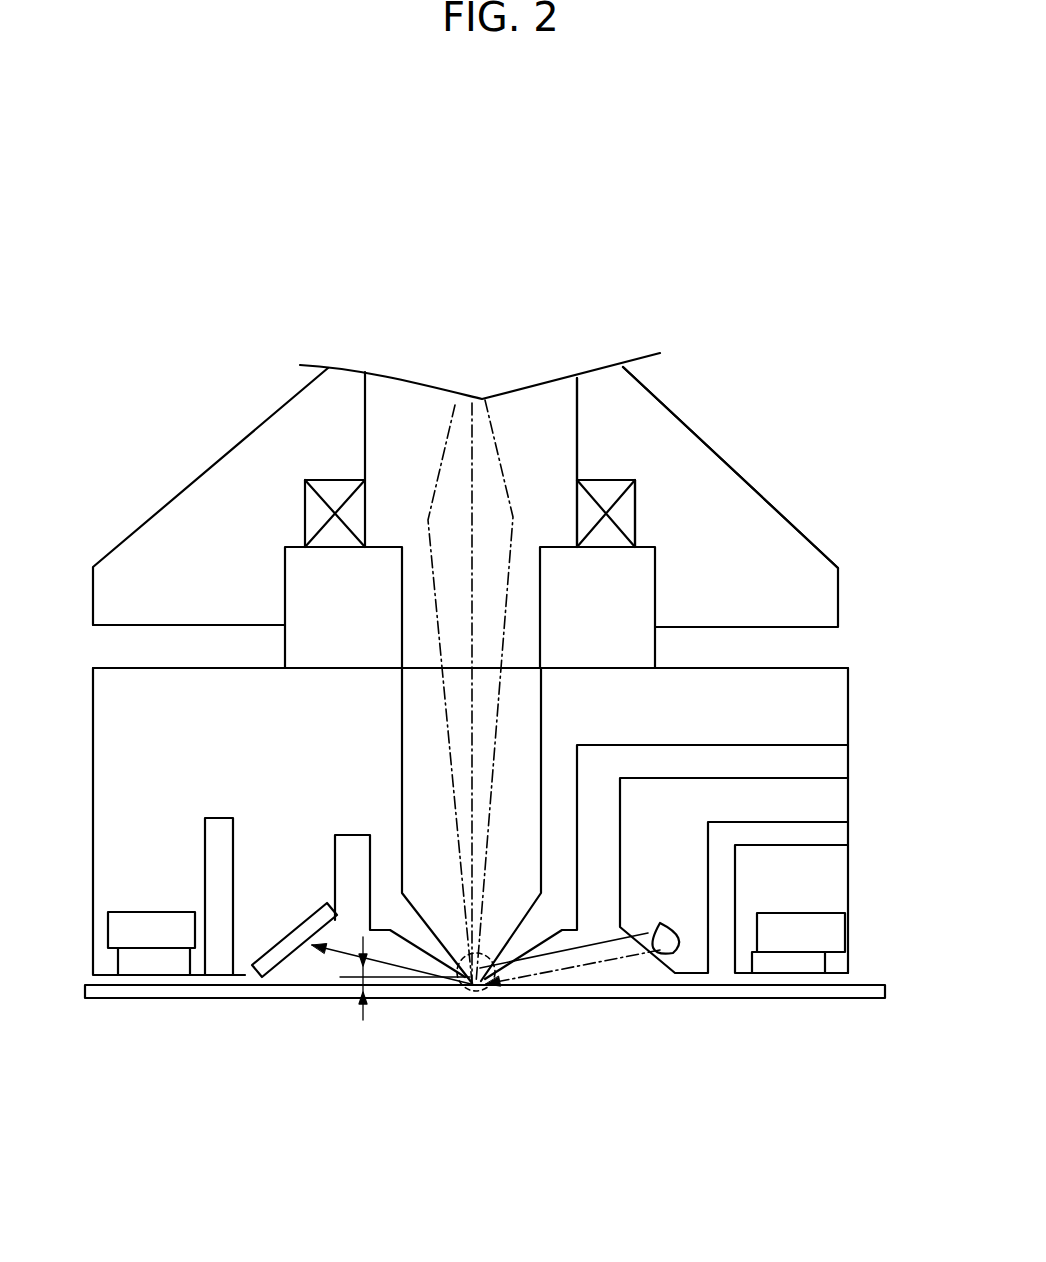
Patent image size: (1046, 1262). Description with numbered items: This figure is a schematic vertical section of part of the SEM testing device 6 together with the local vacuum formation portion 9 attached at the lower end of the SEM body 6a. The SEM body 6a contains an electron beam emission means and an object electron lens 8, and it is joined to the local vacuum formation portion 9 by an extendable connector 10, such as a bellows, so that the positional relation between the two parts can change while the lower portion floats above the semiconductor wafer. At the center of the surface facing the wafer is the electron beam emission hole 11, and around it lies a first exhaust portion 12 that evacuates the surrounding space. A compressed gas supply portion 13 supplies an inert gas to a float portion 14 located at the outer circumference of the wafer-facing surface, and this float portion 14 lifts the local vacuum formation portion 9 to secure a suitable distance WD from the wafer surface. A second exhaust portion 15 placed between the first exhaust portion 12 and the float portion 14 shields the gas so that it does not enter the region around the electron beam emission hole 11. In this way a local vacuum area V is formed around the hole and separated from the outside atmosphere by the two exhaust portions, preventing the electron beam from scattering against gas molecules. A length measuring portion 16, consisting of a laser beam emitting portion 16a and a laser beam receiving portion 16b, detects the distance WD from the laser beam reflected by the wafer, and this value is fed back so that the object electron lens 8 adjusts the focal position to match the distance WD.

The SEM testing device 6 is at (716, 423).
The SEM body 6a is at (797, 527).
The object electron lens 8 is at (598, 480).
The local vacuum formation portion 9 is at (850, 699).
The extendable connector 10 is at (635, 650).
The electron beam emission hole 11 is at (473, 988).
The first exhaust portion 12 is at (807, 763).
The compressed gas supply portion 13 is at (813, 937).
The float portion 14 is at (790, 965).
The second exhaust portion 15 is at (810, 837).
The length measuring portion 16 is at (465, 1021).
The laser beam emitting portion 16a is at (579, 995).
The laser beam receiving portion 16b is at (290, 957).
The distance WD is at (367, 979).
The local vacuum area V is at (503, 1000).